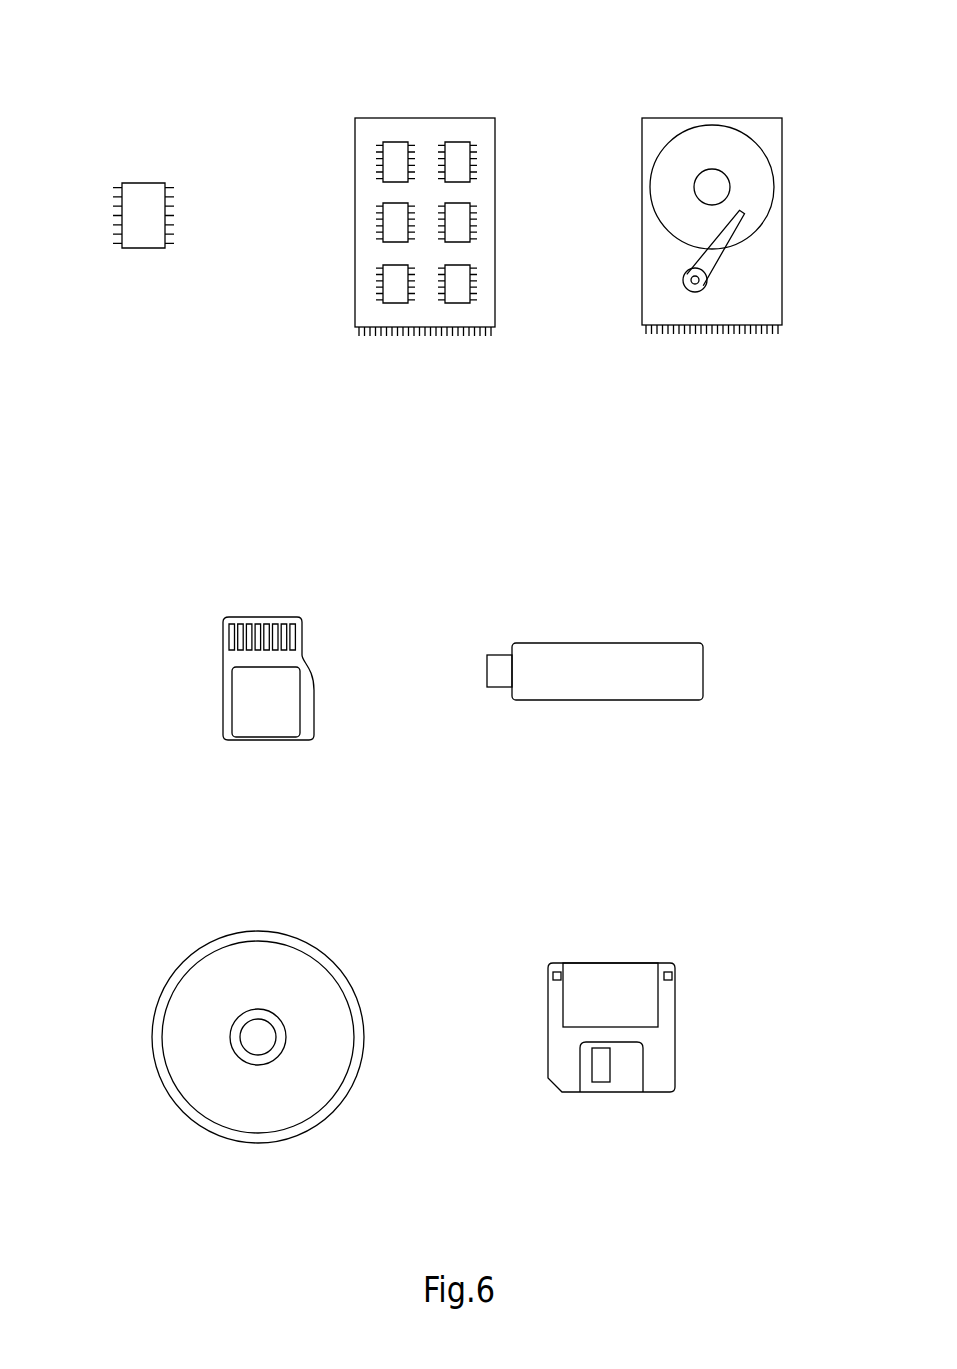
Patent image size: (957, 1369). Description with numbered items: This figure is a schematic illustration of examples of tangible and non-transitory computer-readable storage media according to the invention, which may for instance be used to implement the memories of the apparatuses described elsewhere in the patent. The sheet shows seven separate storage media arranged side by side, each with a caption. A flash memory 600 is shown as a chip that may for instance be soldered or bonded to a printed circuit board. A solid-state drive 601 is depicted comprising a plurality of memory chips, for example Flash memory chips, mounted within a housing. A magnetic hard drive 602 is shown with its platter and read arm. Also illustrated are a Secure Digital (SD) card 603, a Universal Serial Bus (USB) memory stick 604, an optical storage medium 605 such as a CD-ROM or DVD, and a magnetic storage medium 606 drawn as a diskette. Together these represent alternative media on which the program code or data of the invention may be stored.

The flash memory 600 is at (168, 140).
The solid-state drive 601 is at (495, 77).
The magnetic hard drive 602 is at (782, 78).
The Secure Digital (SD) card 603 is at (305, 580).
The Universal Serial Bus (USB) memory stick 604 is at (676, 600).
The optical storage medium 605 is at (343, 925).
The magnetic storage medium 606 is at (670, 922).